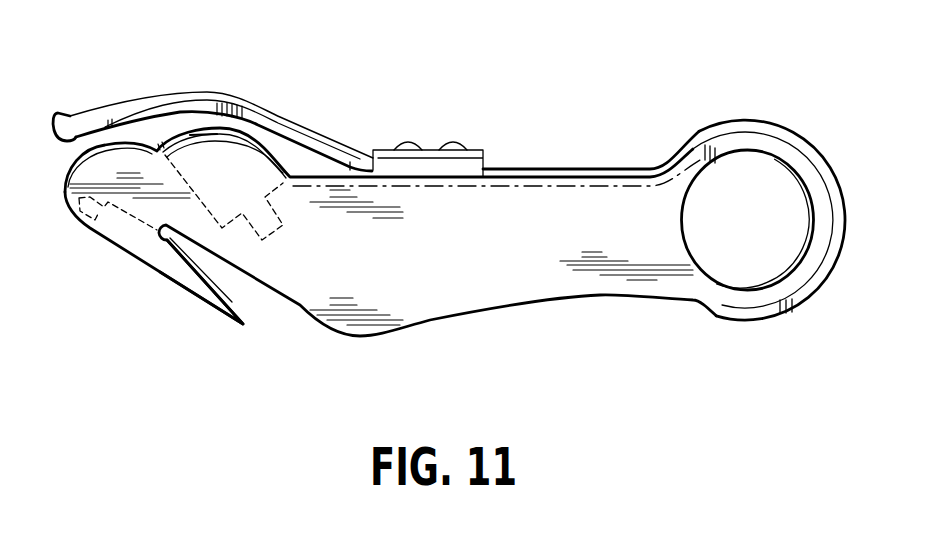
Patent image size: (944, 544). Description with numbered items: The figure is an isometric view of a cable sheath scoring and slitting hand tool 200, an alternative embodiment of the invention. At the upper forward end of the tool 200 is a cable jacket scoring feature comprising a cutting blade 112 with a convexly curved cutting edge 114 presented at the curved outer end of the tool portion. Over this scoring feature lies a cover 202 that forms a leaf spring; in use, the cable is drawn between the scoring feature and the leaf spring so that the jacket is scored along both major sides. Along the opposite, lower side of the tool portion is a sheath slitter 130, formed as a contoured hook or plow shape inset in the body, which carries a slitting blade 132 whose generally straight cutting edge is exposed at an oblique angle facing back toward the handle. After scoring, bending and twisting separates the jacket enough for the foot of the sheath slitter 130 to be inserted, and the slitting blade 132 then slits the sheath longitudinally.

The tool 200 is at (553, 212).
The cover 202 is at (207, 93).
The cutting blade 112 is at (250, 177).
The curved cutting edge 114 is at (162, 133).
The sheath slitter 130 is at (216, 311).
The slitting blade 132 is at (117, 232).